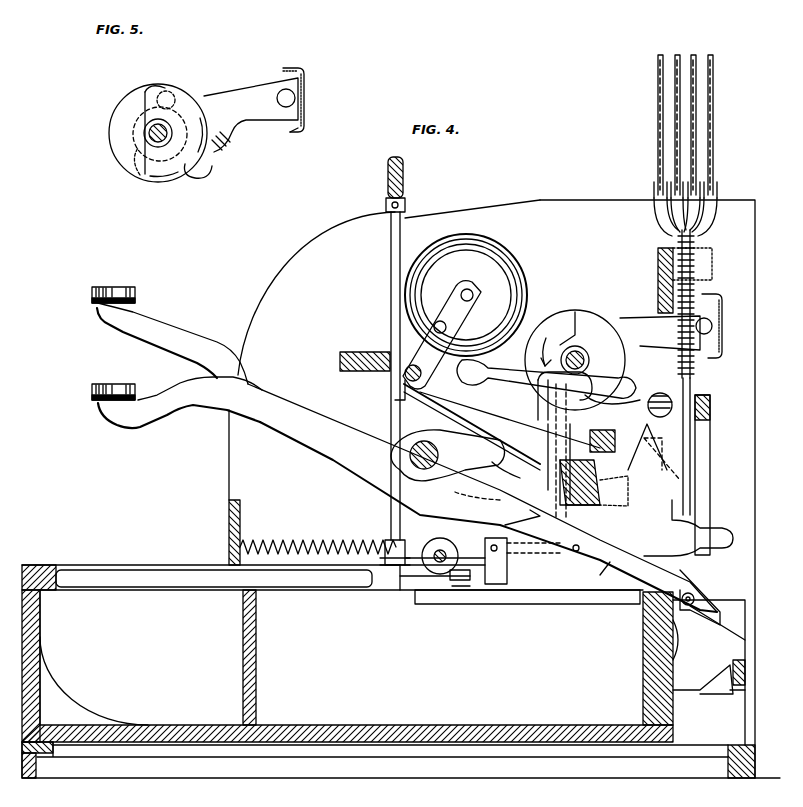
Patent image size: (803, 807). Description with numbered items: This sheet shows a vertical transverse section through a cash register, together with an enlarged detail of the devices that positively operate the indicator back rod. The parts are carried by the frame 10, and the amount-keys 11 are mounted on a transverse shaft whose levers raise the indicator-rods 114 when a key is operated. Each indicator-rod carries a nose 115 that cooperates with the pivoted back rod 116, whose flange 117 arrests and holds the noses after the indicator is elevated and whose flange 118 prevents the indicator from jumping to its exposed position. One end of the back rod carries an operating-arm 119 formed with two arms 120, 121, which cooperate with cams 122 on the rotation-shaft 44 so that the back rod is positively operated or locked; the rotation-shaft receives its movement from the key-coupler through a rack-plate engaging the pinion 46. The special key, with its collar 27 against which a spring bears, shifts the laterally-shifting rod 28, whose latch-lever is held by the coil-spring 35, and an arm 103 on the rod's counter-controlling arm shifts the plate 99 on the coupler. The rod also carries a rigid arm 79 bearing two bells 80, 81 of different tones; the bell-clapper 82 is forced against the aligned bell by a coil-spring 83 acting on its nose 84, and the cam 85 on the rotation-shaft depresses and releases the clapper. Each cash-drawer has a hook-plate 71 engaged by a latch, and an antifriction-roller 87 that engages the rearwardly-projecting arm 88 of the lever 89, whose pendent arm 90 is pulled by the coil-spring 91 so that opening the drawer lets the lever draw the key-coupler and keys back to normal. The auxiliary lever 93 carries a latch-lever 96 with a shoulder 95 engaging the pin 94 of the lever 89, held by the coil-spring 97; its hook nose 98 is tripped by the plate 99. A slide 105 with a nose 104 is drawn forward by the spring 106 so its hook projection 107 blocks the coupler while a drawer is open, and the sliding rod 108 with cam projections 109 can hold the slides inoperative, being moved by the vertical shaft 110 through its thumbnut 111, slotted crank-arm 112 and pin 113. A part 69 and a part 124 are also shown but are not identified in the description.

In FIG. 4, the frame 10 is at (482, 477).
In FIG. 4, the amount-keys 11 is at (160, 338).
In FIG. 4, the collar 27 is at (520, 480).
In FIG. 4, the laterally-shifting rod 28 is at (395, 382).
In FIG. 4, the coil-spring 35 is at (422, 376).
In FIG. 5, the rotation-shaft 44 is at (146, 133).
In FIG. 4, the pinion 46 is at (432, 482).
In FIG. 4, the base block 69 is at (730, 686).
In FIG. 4, the hook-plates 71 is at (709, 672).
In FIG. 4, the rigid arm 79 is at (462, 308).
In FIG. 4, the bell 80 is at (466, 295).
In FIG. 4, the bell 81 is at (654, 430).
In FIG. 4, the bell-clapper 82 is at (495, 375).
In FIG. 4, the coil-spring 83 is at (654, 452).
In FIG. 4, the nose 84 is at (584, 357).
In FIG. 4, the cam 85 is at (572, 324).
In FIG. 4, the antifriction-roller 87 is at (700, 612).
In FIG. 4, the rearwardly-projecting arm 88 is at (705, 597).
In FIG. 4, the lever 89 is at (556, 436).
In FIG. 4, the pendent arm 90 is at (392, 520).
In FIG. 4, the coil-spring 91 is at (312, 487).
In FIG. 4, the auxiliary lever 93 is at (600, 505).
In FIG. 4, the laterally-projecting pin 94 is at (508, 526).
In FIG. 4, the shoulder 95 is at (535, 405).
In FIG. 4, the latch-lever 96 is at (520, 392).
In FIG. 4, the coil-spring 97 is at (498, 500).
In FIG. 4, the hook nose 98 is at (588, 400).
In FIG. 4, the plate 99 is at (605, 441).
In FIG. 4, the projecting arm 103 is at (400, 404).
In FIG. 4, the nose 104 is at (444, 416).
In FIG. 4, the slide 105 is at (604, 566).
In FIG. 4, the spring 106 is at (552, 565).
In FIG. 4, the hook projection 107 is at (680, 520).
In FIG. 4, the sliding rod 108 is at (436, 553).
In FIG. 4, the cam projections 109 is at (478, 598).
In FIG. 4, the vertical shaft 110 is at (388, 255).
In FIG. 4, the thumbnut 111 is at (403, 180).
In FIG. 4, the slotted crank-arm 112 is at (435, 578).
In FIG. 4, the pin 113 is at (456, 580).
In FIG. 4, the indicator-rods 114 is at (692, 474).
In FIG. 4, the nose 115 is at (700, 380).
In FIG. 5, the back rod 116 is at (306, 100).
In FIG. 4, the back rod 116 is at (723, 318).
In FIG. 5, the flange 117 is at (293, 67).
In FIG. 4, the flange 117 is at (704, 280).
In FIG. 5, the flange 118 is at (297, 132).
In FIG. 4, the flange 118 is at (718, 358).
In FIG. 5, the operating-arm 119 is at (248, 115).
In FIG. 4, the operating-arm 119 is at (660, 333).
In FIG. 5, the arm 120 is at (168, 98).
In FIG. 5, the arm 121 is at (168, 174).
In FIG. 5, the cams 122 is at (138, 148).
In FIG. 5, the lobe 124 is at (208, 172).